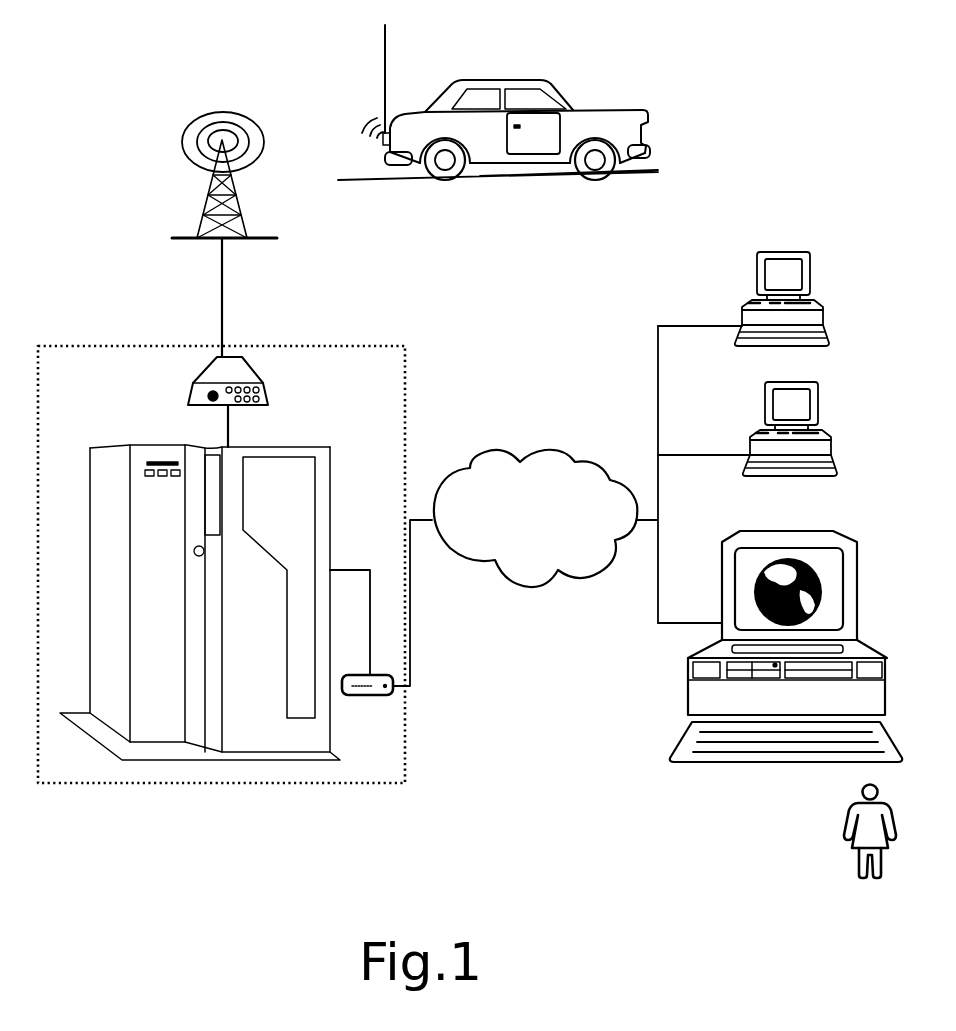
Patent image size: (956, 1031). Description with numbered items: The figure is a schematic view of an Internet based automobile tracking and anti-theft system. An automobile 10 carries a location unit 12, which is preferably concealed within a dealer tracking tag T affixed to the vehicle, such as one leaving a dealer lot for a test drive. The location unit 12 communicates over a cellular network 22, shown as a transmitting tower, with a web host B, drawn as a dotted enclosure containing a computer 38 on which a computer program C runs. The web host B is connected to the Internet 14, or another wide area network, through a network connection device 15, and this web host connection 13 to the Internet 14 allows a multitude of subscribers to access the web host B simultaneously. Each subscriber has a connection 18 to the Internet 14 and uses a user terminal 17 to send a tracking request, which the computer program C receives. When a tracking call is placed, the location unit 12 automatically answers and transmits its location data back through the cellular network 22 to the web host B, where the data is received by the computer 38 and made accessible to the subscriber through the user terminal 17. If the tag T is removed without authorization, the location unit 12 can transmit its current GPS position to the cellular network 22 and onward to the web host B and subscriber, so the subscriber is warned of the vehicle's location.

The automobile 10 is at (595, 108).
The location unit 12 is at (382, 72).
The dealer tracking tag T is at (385, 143).
The cellular network 22 is at (240, 117).
The web host B is at (287, 783).
The computer 38 is at (262, 730).
The computer program C is at (280, 503).
The network connection device 15 is at (357, 700).
The web host connection 13 is at (415, 650).
The Internet 14 is at (535, 518).
The connection 18 is at (650, 430).
The user terminal 17 is at (685, 693).